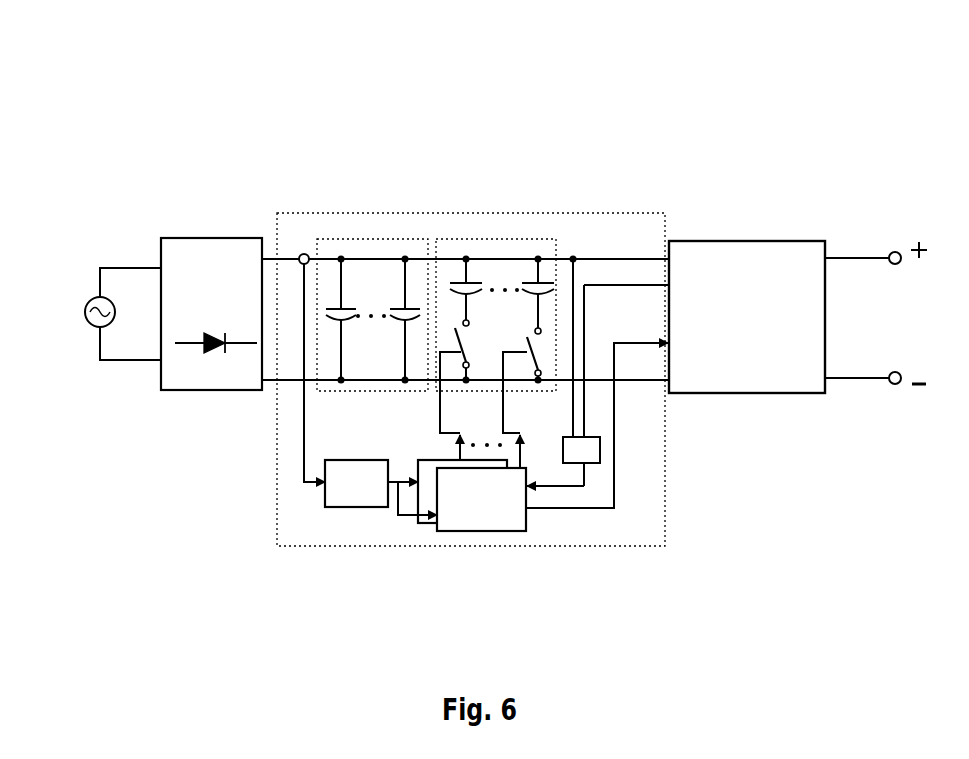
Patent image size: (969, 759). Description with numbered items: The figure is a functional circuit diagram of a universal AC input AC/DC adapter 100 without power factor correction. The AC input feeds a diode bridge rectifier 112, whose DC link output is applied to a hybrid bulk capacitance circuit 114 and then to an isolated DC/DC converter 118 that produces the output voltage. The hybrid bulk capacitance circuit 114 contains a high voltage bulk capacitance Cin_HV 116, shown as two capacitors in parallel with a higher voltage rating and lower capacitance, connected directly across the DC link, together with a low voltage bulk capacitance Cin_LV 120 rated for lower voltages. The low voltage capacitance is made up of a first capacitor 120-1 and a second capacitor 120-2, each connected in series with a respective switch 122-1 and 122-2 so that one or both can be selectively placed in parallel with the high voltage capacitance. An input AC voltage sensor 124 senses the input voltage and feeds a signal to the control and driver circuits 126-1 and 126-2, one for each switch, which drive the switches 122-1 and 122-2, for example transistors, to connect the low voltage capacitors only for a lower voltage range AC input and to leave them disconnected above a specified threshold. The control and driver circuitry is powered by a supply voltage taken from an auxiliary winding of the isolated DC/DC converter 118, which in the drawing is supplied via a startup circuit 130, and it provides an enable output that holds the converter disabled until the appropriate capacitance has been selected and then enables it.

The universal AC input AC/DC adapter 100 is at (165, 40).
The diode bridge rectifier 112 is at (210, 235).
The hybrid bulk capacitance circuit 114 is at (447, 213).
The high voltage bulk capacitance Cin_HV 116 is at (386, 238).
The isolated DC/DC converter 118 is at (740, 240).
The low voltage bulk capacitance Cin_LV 120 is at (513, 239).
The first low voltage capacitor 120-1 is at (540, 281).
The second low voltage capacitor 120-2 is at (466, 281).
The first series switch 122-1 is at (468, 352).
The second series switch 122-2 is at (537, 355).
The input AC voltage sensor 124 is at (354, 502).
The first control and driver circuit 126-1 is at (482, 523).
The second control and driver circuit 126-2 is at (427, 527).
The startup circuit 130 is at (602, 462).